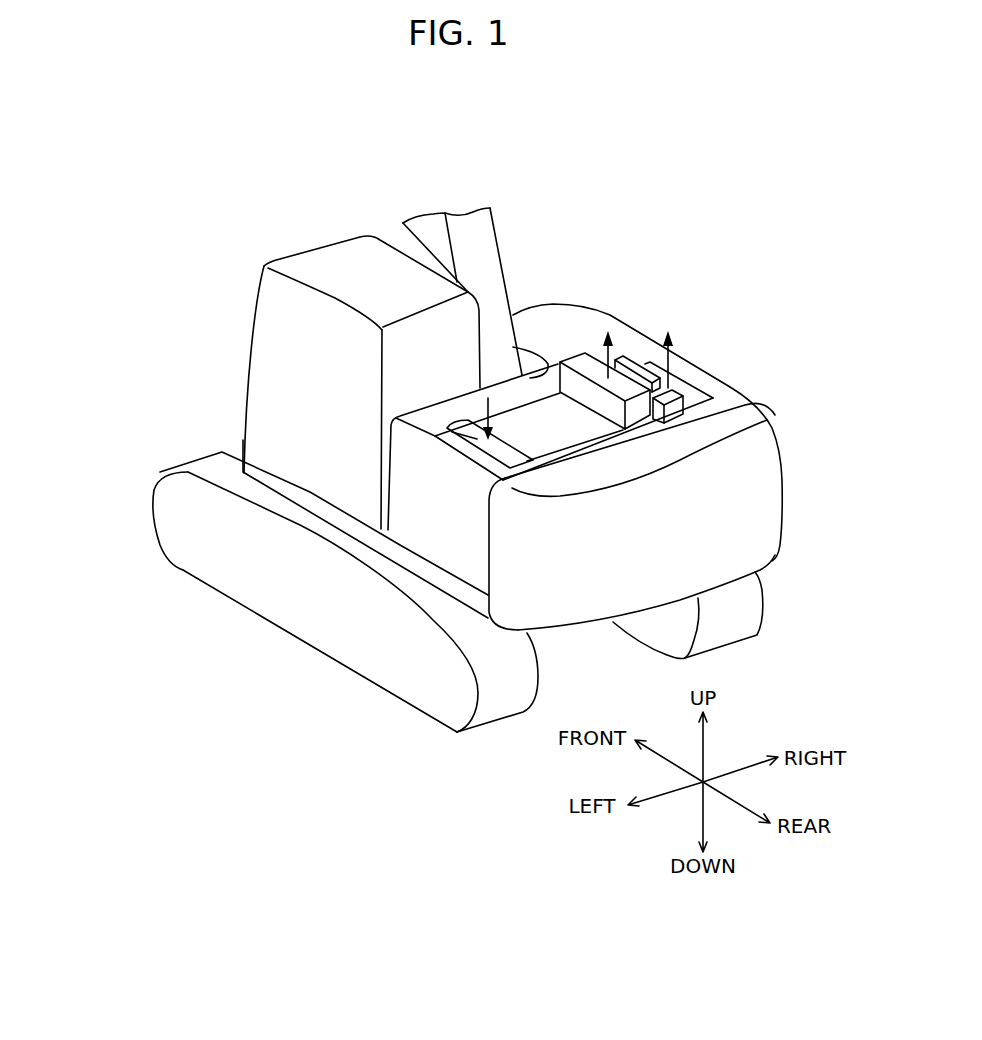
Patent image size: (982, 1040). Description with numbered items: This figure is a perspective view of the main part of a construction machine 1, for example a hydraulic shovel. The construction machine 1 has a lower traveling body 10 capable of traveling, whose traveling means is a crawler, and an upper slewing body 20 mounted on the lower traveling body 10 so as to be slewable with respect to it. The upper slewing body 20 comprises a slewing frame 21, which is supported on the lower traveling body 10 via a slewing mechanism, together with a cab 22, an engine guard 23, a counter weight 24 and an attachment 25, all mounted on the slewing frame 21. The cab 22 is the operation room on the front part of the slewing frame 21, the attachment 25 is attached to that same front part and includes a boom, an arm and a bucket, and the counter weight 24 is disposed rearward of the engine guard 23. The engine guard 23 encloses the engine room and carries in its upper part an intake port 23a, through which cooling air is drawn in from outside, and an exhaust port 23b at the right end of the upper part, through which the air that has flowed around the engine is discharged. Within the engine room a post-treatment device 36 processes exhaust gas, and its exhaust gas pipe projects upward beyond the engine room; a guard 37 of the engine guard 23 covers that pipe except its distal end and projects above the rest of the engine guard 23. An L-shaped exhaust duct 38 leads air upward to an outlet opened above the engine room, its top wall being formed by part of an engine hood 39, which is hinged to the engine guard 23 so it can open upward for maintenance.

The construction machine 1 is at (775, 270).
The lower traveling body 10 is at (135, 500).
The upper slewing body 20 is at (202, 346).
The slewing frame 21 is at (367, 537).
The cab 22 is at (325, 260).
The engine guard 23 is at (596, 323).
The intake port 23a is at (440, 436).
The exhaust port 23b is at (690, 390).
The counter weight 24 is at (763, 497).
The attachment 25 is at (490, 262).
The post-treatment device 36 is at (633, 358).
The guard 37 is at (690, 388).
The exhaust duct 38 is at (573, 353).
The engine hood 39 is at (553, 430).